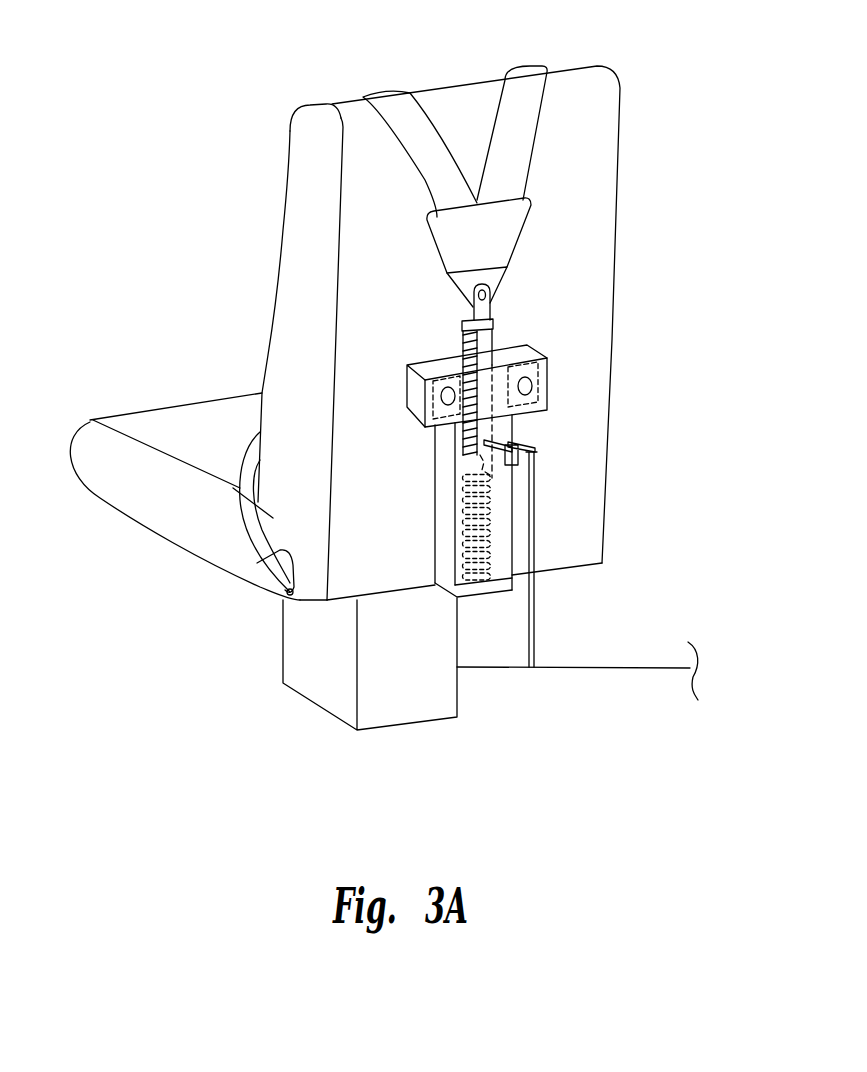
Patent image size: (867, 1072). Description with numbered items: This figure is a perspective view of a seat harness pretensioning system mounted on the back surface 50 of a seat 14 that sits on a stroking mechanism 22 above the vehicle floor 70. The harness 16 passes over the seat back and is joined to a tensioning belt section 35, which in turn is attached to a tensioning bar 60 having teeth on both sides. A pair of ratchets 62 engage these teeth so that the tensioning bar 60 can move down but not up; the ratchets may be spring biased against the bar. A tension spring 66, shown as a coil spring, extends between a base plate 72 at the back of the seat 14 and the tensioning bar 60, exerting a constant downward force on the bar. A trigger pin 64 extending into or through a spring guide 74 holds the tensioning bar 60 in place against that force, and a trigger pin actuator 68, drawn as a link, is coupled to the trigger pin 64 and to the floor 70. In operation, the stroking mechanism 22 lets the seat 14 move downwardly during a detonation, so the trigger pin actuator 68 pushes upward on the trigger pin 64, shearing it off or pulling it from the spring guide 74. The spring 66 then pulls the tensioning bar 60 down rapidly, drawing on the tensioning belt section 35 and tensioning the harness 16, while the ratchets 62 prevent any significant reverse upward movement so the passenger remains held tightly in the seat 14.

The seat 14 is at (147, 422).
The harness 16 is at (423, 127).
The stroking mechanism 22 is at (307, 678).
The tensioning belt section 35 is at (503, 243).
The back surface 50 is at (600, 140).
The tensioning bar 60 is at (485, 338).
The ratchet 62 is at (552, 398).
The trigger pin 64 is at (538, 468).
The tension spring 66 is at (490, 547).
The trigger pin actuator 68 is at (533, 632).
The floor 70 is at (653, 667).
The base plate 72 is at (492, 600).
The spring guide 74 is at (503, 502).